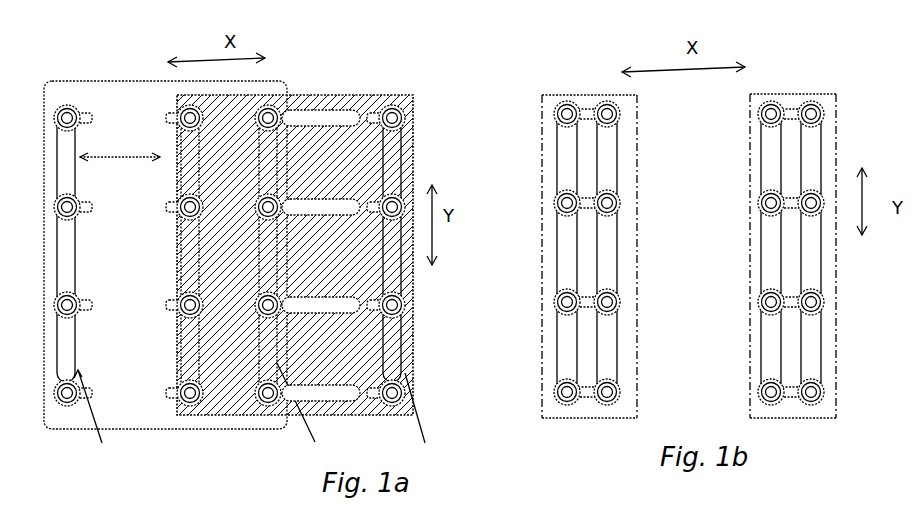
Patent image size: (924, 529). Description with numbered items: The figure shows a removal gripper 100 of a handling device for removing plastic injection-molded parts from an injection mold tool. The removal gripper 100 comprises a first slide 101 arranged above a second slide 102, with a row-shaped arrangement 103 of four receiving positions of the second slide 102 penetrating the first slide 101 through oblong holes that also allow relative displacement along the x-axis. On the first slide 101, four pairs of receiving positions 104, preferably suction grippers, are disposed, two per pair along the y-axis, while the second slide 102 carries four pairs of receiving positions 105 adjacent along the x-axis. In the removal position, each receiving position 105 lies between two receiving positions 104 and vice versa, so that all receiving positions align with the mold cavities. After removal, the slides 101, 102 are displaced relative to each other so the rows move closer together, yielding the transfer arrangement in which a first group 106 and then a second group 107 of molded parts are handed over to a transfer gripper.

In FIG. 1A, the removal gripper 100 is at (188, 452).
In FIG. 1A, the first slide 101 is at (313, 95).
In FIG. 1A, the second slide 102 is at (75, 95).
In FIG. 1A, the row-shaped arrangement 103 is at (277, 90).
In FIG. 1A, the receiving positions 104 is at (180, 125).
In FIG. 1B, the receiving positions 104 is at (617, 119).
In FIG. 1A, the receiving positions 105 is at (77, 117).
In FIG. 1B, the receiving positions 105 is at (562, 123).
In FIG. 1B, the first group of plastic injection-molded parts 106 is at (620, 420).
In FIG. 1B, the second group of plastic injection-molded parts 107 is at (803, 422).